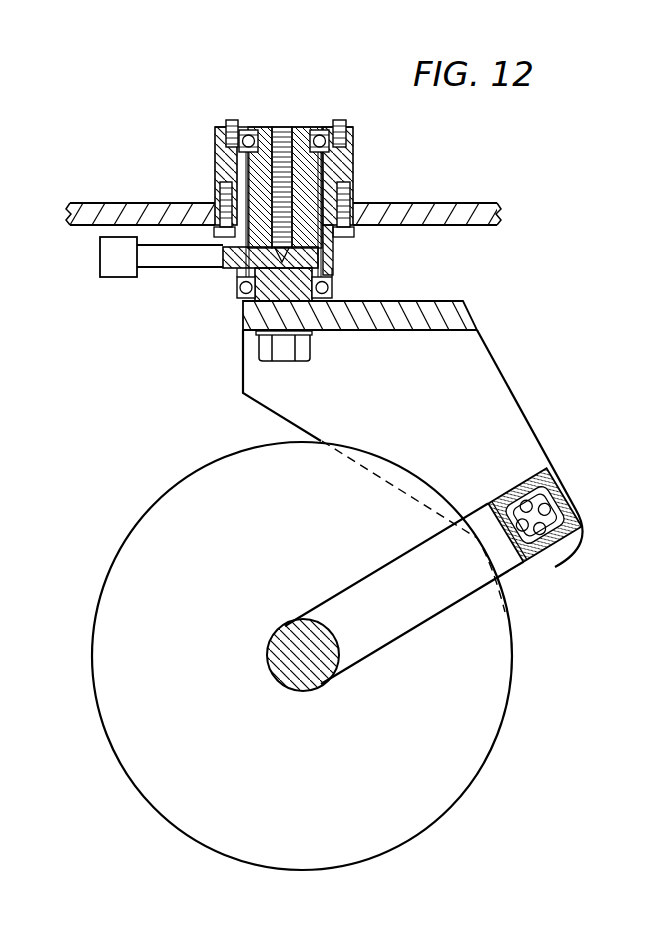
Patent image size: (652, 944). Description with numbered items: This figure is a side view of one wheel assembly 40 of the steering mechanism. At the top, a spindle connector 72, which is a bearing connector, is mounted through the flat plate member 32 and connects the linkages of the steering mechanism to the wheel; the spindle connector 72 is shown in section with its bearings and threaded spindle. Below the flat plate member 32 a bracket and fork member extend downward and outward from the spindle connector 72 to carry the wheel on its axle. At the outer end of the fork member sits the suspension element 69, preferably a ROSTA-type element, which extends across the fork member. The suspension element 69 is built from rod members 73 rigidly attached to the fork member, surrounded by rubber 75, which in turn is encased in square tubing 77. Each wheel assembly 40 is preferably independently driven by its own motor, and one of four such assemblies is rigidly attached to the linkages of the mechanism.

The flat plate member 32 is at (111, 203).
The spindle connector 72 is at (356, 152).
The wheel assembly 40 is at (576, 679).
The suspension element 69 is at (574, 510).
The rod members 73 is at (516, 497).
The rubber 75 is at (510, 497).
The square tubing 77 is at (521, 562).